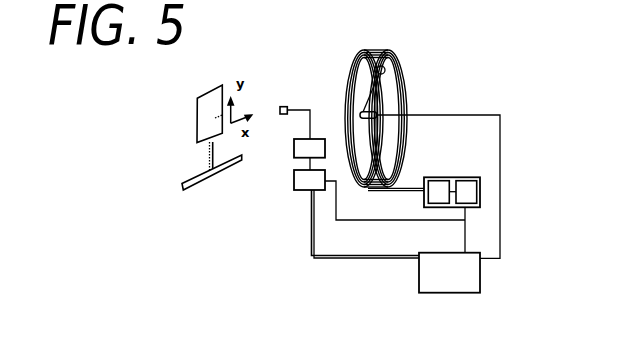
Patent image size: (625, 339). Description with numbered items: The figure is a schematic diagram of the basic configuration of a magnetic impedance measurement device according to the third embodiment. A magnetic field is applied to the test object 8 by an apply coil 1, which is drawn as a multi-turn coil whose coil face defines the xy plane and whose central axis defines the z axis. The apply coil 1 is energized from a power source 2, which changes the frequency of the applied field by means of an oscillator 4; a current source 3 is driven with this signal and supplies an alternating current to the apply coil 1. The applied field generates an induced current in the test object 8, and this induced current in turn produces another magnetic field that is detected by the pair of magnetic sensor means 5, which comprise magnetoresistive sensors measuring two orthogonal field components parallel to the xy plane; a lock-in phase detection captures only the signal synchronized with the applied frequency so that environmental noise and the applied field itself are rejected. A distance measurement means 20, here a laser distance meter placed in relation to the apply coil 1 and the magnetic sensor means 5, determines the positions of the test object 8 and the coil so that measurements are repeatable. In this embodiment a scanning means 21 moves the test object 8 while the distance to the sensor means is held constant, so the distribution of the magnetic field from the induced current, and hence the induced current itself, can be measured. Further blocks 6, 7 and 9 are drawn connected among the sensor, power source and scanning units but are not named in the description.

The apply coil 1 is at (403, 97).
The power source 2 is at (480, 177).
The current source 3 is at (442, 187).
The oscillator 4 is at (478, 195).
The magnetic sensor means 5 is at (287, 106).
The position detection circuit 6 is at (302, 155).
The control unit 7 is at (313, 183).
The test object 8 is at (200, 118).
The processing unit 9 is at (475, 280).
The distance measurement means 20 is at (381, 66).
The scanning means 21 is at (181, 187).